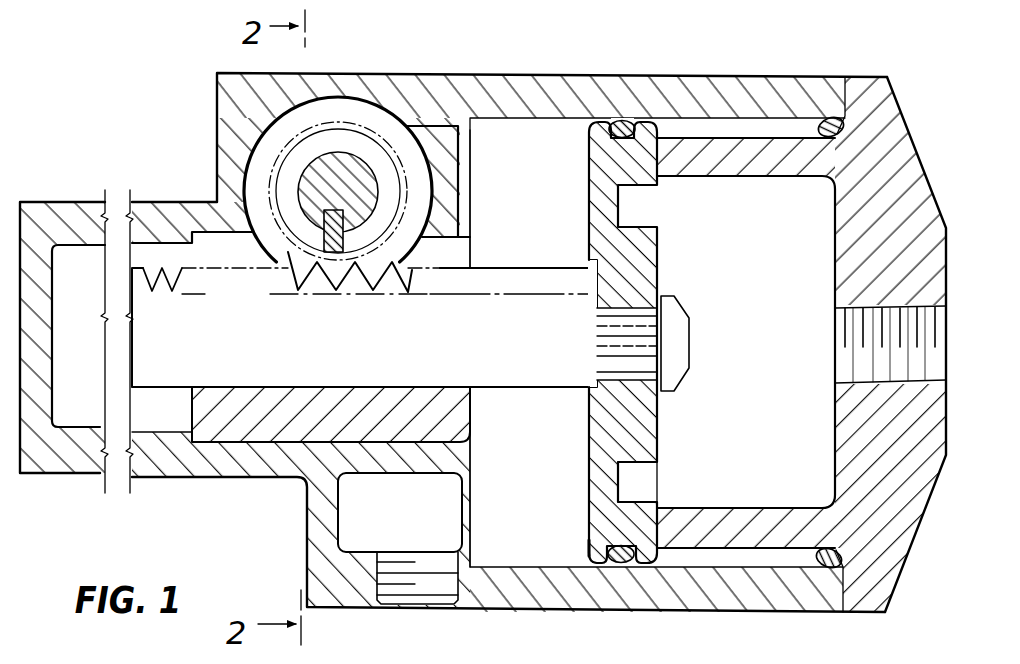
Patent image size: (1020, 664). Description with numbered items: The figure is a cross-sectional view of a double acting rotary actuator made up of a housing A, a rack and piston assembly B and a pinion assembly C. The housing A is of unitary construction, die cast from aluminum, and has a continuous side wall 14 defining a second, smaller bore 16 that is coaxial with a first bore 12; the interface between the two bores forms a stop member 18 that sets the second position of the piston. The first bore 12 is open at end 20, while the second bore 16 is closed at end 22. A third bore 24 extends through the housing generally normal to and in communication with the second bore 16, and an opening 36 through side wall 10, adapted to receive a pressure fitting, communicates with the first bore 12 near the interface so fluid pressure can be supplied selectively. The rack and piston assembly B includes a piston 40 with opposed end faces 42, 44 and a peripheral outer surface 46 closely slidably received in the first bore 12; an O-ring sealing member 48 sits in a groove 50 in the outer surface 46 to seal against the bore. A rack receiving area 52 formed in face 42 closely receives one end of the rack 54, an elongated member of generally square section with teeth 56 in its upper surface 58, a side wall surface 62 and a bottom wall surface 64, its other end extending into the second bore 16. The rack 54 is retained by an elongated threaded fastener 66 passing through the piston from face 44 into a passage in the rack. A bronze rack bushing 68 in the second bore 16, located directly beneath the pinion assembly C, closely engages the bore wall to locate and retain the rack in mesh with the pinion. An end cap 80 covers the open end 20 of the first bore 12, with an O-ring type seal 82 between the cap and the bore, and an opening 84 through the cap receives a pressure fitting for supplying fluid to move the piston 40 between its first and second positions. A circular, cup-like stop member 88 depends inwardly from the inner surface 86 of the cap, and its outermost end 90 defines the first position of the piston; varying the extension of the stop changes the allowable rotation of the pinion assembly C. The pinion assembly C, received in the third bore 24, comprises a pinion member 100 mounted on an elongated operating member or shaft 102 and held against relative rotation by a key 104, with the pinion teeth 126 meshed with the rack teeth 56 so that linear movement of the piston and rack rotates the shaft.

The side wall 10 is at (536, 73).
The first bore 12 is at (555, 132).
The continuous side wall 14 is at (137, 213).
The second bore 16 is at (52, 427).
The stop member 18 is at (474, 458).
The open end 20 is at (752, 234).
The closed end 22 is at (37, 307).
The third bore 24 is at (312, 103).
The opening 36 is at (420, 598).
The piston 40 is at (600, 422).
The end face 42 is at (590, 484).
The end face 44 is at (662, 290).
The peripheral outer surface 46 is at (597, 563).
The O-ring sealing member 48 is at (618, 562).
The groove 50 is at (623, 550).
The rack receiving area 52 is at (593, 258).
The rack 54 is at (364, 327).
The teeth 56 is at (318, 283).
The upper surface 58 is at (483, 266).
The side wall surface 62 is at (276, 336).
The bottom wall surface 64 is at (303, 388).
The elongated threaded fastener 66 is at (675, 372).
The rack bushing 68 is at (380, 427).
The end cap 80 is at (892, 160).
The O-ring type seal 82 is at (838, 136).
The opening 84 is at (925, 378).
The inner surface 86 is at (835, 266).
The stop member 88 is at (826, 527).
The outermost end 90 is at (812, 532).
The pinion member 100 is at (272, 160).
The elongated operating member or shaft 102 is at (345, 155).
The key 104 is at (322, 240).
The teeth 126 is at (366, 285).
The housing A is at (648, 62).
The rack and piston assembly B is at (592, 550).
The pinion assembly C is at (345, 92).